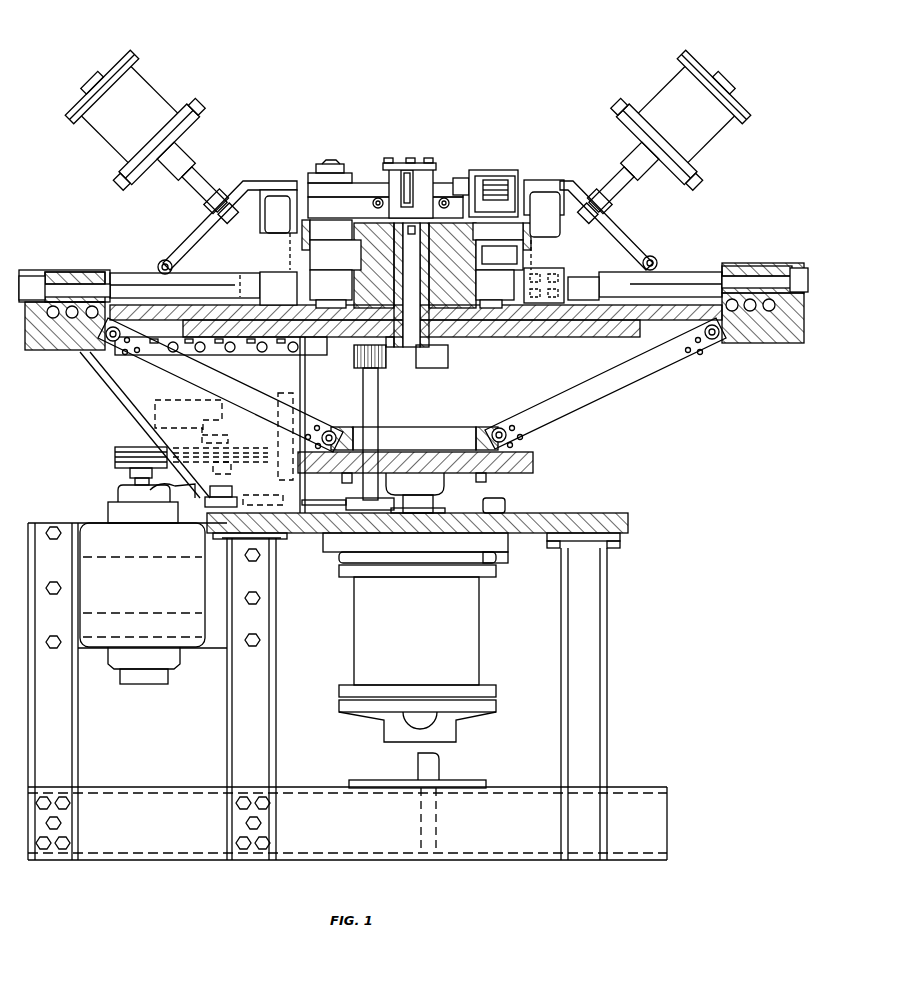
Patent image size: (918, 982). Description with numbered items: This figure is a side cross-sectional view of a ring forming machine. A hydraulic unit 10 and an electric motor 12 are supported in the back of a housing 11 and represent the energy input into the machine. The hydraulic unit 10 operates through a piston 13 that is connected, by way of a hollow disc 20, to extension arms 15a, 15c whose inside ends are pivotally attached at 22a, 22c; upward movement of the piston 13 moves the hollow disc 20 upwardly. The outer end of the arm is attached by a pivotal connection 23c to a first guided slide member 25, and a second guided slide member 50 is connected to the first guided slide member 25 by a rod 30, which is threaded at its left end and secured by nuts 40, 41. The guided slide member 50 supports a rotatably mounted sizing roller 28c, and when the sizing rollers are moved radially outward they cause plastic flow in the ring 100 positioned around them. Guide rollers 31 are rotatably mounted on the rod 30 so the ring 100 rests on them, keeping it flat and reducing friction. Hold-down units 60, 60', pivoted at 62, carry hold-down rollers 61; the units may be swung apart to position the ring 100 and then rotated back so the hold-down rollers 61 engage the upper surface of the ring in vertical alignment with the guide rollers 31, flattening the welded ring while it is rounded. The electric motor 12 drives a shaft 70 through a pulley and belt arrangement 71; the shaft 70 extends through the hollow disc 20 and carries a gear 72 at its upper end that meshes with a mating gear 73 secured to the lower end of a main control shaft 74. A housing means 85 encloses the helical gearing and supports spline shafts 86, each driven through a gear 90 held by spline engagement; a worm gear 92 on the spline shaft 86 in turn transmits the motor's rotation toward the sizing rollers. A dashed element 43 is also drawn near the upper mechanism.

The hydraulic unit 10 is at (478, 618).
The housing 11 is at (628, 598).
The electric motor 12 is at (147, 685).
The piston 13 is at (430, 505).
The extension arm 15a is at (650, 370).
The extension arm 15c is at (235, 393).
The hollow disc 20 is at (454, 448).
The pivotal attachment 22a is at (511, 418).
The pivotal attachment 22c is at (334, 420).
The pivotal connection 23c is at (118, 352).
The first guided slide member 25 is at (60, 270).
The sizing roller 28c is at (416, 264).
The rod 30 is at (192, 282).
The guide roller 31 is at (262, 266).
The nut 40 is at (104, 272).
The nut 41 is at (42, 262).
The switch 43 is at (258, 228).
The second guided slide member 50 is at (572, 280).
The hold-down unit 60 is at (653, 132).
The hold-down unit 60' is at (162, 133).
The hold-down roller 61 is at (538, 192).
The pivot 62 is at (652, 258).
The shaft 70 is at (374, 408).
The pulley and belt arrangement 71 is at (104, 454).
The gear 72 is at (352, 360).
The mating gear 73 is at (450, 358).
The main control shaft 74 is at (411, 365).
The housing means 85 is at (455, 177).
The spline shaft 86 is at (352, 175).
The gear 90 is at (407, 168).
The worm gear 92 is at (497, 178).
The ring 100 is at (290, 246).